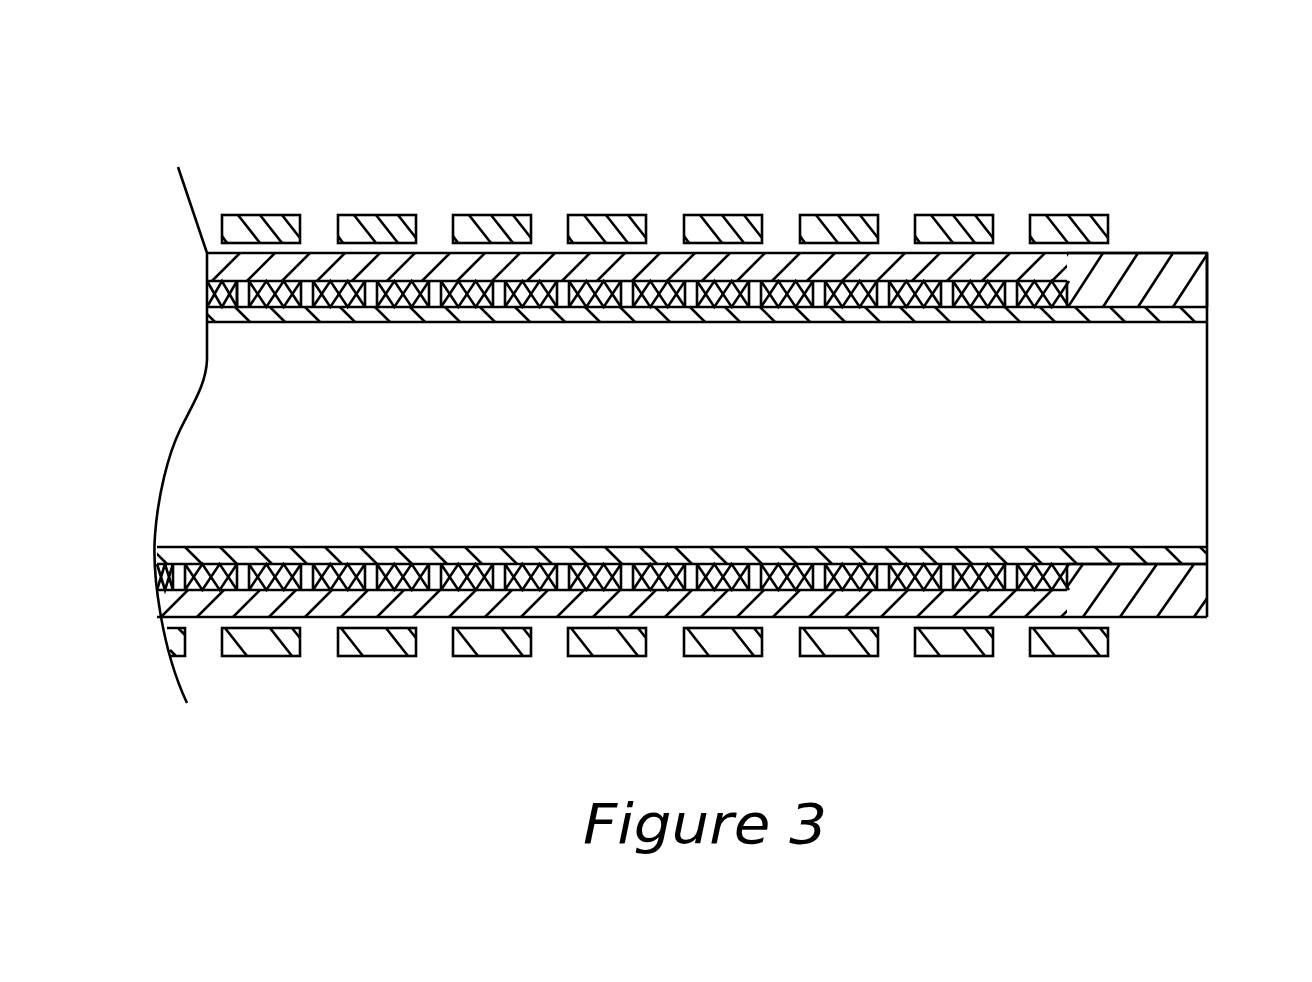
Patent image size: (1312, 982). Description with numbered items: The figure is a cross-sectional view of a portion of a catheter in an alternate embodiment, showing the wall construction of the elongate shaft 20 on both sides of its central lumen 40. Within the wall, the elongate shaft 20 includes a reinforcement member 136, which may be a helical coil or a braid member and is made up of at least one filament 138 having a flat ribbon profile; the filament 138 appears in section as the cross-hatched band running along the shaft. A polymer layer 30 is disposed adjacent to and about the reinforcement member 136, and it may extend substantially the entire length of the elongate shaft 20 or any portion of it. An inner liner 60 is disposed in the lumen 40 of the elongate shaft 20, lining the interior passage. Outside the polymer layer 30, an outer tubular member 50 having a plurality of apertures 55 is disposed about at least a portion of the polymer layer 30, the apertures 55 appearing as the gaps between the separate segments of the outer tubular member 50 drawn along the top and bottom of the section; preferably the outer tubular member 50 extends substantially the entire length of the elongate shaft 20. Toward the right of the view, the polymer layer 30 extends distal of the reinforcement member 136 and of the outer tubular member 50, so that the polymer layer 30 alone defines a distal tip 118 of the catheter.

The elongate shaft 20 is at (722, 112).
The polymer layer 30 is at (212, 265).
The lumen 40 is at (230, 436).
The outer tubular member 50 is at (287, 215).
The apertures 55 is at (360, 230).
The inner liner 60 is at (205, 548).
The distal tip 118 is at (1183, 268).
The reinforcement member 136 is at (207, 293).
The filament 138 is at (197, 579).